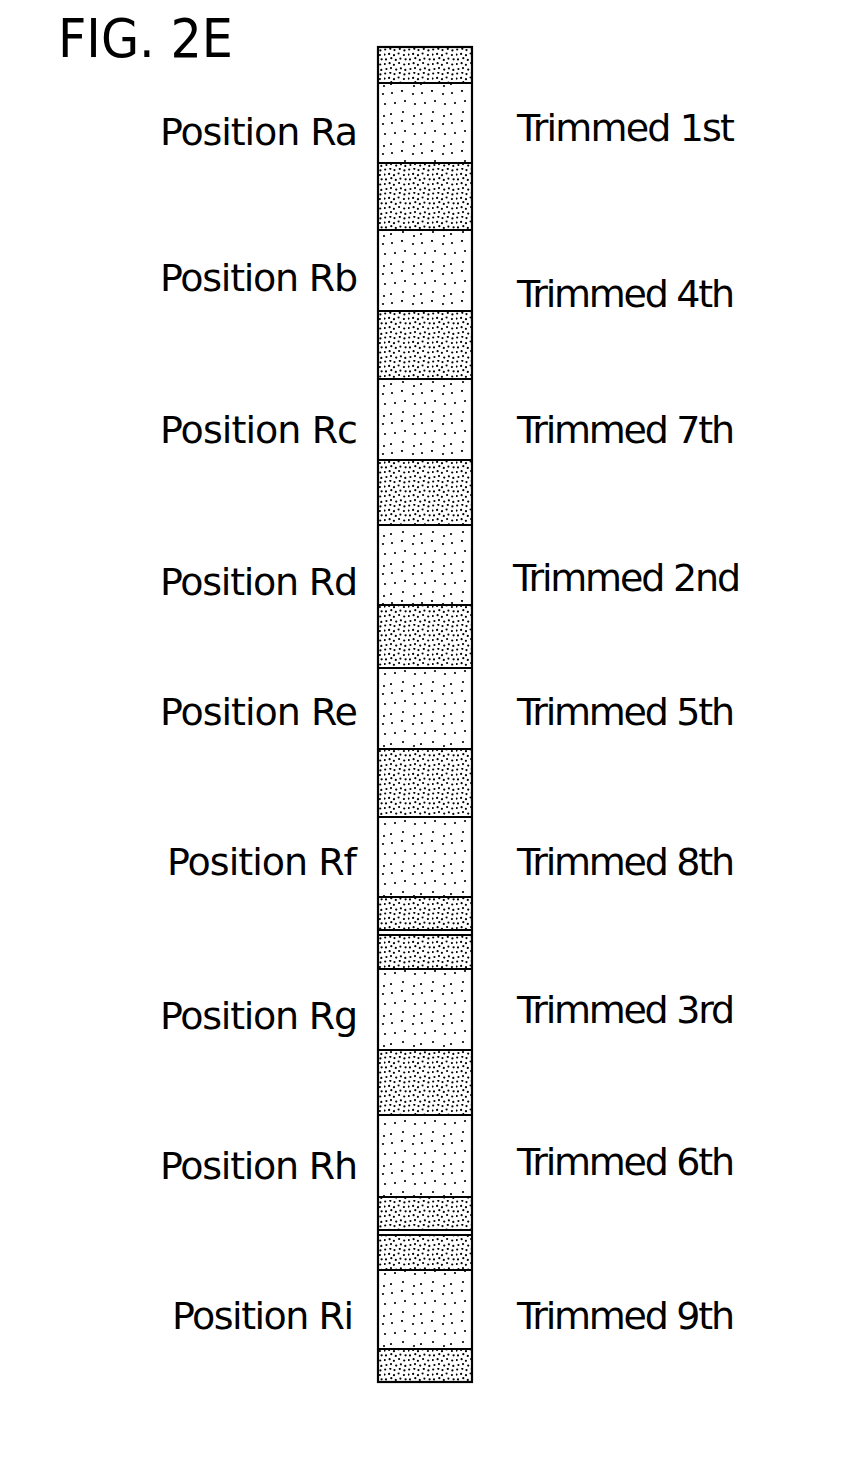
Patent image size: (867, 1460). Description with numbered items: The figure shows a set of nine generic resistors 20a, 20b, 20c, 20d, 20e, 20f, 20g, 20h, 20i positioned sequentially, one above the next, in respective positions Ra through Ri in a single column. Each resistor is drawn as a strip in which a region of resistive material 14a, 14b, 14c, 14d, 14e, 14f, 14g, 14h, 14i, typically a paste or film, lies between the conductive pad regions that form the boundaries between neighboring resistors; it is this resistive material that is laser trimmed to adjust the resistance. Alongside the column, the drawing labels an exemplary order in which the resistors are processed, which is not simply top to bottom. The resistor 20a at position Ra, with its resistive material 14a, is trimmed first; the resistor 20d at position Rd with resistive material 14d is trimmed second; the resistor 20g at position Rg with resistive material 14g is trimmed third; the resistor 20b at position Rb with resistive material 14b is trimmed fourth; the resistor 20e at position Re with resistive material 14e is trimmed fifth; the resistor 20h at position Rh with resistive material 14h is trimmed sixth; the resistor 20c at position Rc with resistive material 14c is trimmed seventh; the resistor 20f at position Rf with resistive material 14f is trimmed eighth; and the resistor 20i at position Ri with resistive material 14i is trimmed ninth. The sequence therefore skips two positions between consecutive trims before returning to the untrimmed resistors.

The resistive material 14a is at (455, 118).
The resistive material 14b is at (455, 266).
The resistive material 14c is at (455, 424).
The resistive material 14d is at (455, 568).
The resistive material 14e is at (455, 706).
The resistive material 14f is at (455, 856).
The resistive material 14g is at (455, 994).
The resistive material 14h is at (457, 1150).
The resistive material 14i is at (457, 1305).
The resistor 20a is at (378, 110).
The resistor 20b is at (378, 238).
The resistor 20c is at (378, 373).
The resistor 20d is at (378, 525).
The resistor 20e is at (378, 668).
The resistor 20f is at (378, 815).
The resistor 20g is at (378, 965).
The resistor 20h is at (378, 1107).
The resistor 20i is at (378, 1263).